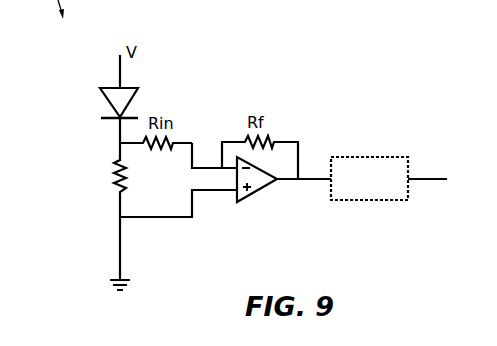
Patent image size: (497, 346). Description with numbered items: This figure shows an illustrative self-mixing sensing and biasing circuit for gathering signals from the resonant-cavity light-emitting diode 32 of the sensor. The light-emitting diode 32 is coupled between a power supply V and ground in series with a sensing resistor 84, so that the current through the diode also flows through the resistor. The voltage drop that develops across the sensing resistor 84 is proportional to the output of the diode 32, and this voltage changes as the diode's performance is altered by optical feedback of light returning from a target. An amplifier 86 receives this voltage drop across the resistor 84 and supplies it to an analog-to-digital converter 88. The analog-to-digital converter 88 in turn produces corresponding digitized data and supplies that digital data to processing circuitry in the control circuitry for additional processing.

The resonant-cavity light-emitting diode 32 is at (135, 98).
The sensing resistor 84 is at (96, 181).
The amplifier 86 is at (257, 198).
The analog-to-digital converter 88 is at (369, 157).